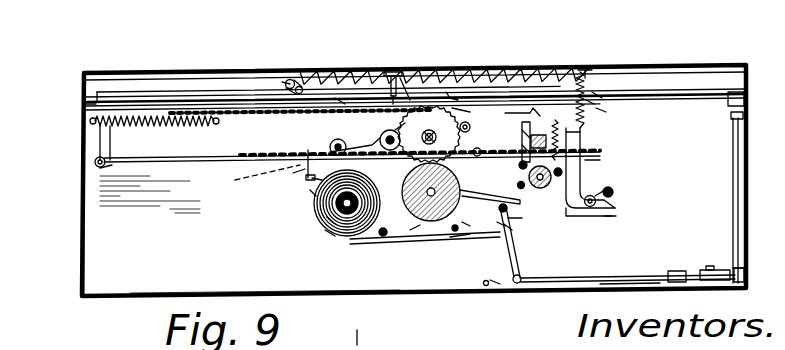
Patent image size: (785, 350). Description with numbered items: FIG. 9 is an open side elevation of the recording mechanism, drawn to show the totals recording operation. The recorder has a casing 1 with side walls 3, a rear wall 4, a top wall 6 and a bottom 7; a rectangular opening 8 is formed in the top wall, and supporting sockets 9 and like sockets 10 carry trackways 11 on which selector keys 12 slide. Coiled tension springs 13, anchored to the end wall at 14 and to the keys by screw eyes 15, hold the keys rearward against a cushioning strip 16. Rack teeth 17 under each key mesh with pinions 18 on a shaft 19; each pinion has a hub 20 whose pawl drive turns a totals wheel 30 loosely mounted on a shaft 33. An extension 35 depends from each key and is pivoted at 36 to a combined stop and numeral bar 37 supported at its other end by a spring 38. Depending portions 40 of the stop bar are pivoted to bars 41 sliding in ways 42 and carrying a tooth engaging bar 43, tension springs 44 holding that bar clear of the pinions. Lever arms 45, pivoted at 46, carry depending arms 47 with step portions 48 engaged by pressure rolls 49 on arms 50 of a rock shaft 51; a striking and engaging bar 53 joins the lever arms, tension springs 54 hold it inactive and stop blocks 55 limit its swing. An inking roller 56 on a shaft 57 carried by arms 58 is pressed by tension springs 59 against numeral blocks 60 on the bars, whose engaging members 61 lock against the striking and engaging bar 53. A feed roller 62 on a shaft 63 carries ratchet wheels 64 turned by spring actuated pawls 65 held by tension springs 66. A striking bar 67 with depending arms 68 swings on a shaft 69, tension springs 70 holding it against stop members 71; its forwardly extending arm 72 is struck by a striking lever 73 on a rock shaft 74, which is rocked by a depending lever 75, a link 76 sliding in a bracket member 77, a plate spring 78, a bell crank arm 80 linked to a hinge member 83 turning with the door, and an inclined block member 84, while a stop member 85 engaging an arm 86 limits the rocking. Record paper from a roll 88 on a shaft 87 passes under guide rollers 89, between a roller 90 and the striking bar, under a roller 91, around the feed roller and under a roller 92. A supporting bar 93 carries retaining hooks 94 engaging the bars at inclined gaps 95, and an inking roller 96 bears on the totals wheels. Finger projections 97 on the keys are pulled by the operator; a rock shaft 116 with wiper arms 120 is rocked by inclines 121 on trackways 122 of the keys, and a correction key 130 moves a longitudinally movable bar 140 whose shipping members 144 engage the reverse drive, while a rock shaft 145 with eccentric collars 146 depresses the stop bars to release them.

The casing 1 is at (110, 299).
The side walls 3 is at (92, 272).
The rear wall 4 is at (82, 250).
The top wall 6 is at (170, 74).
The bottom 7 is at (146, 299).
The rectangular opening 8 is at (393, 70).
The supporting sockets 9 is at (748, 85).
The sockets 10 is at (86, 110).
The trackways 11 is at (120, 105).
The selector keys 12 is at (100, 178).
The coiled tension springs 13 is at (98, 140).
The spring connection point 14 is at (90, 122).
The screw eyes 15 is at (212, 126).
The cushioning strip 16 is at (84, 98).
The rack teeth 17 is at (265, 117).
The pinions 18 is at (384, 132).
The shaft 19 is at (398, 126).
The hub 20 is at (425, 130).
The totals wheel 30 is at (384, 238).
The shaft 33 is at (417, 227).
The extension 35 is at (95, 163).
The pivotal connection 36 is at (84, 180).
The combined stop and numeral bar 37 is at (293, 173).
The spring 38 is at (596, 118).
The depending portions 40 is at (581, 80).
The bars 41 is at (520, 105).
The ways 42 is at (497, 108).
The tooth engaging bar 43 is at (455, 108).
The tension springs 44 is at (546, 118).
The lever arms 45 is at (584, 132).
The pivotal connection 46 is at (450, 96).
The depending arms 47 is at (582, 150).
The step portions 48 is at (622, 218).
The pressure rolls 49 is at (618, 213).
The arms 50 is at (596, 202).
The rock shaft 51 is at (612, 191).
The striking and engaging bar 53 is at (602, 110).
The tension springs 54 is at (598, 95).
The stop blocks 55 is at (590, 100).
The inking roller 56 is at (528, 178).
The shaft 57 is at (518, 186).
The arms 58 is at (498, 152).
The tension springs 59 is at (470, 118).
The numeral blocks 60 is at (412, 205).
The engaging members 61 is at (398, 160).
The feed roller 62 is at (560, 163).
The shaft 63 is at (562, 170).
The ratchet wheels 64 is at (600, 180).
The spring actuated pawls 65 is at (587, 70).
The tension springs 66 is at (591, 74).
The striking bar 67 is at (522, 212).
The depending arms 68 is at (508, 228).
The shaft 69 is at (467, 225).
The tension springs 70 is at (500, 225).
The stop members 71 is at (488, 286).
The forwardly extending arm 72 is at (518, 215).
The striking lever 73 is at (515, 218).
The rock shaft 74 is at (512, 222).
The depending lever 75 is at (543, 284).
The link 76 is at (618, 286).
The bracket member 77 is at (672, 284).
The plate spring 78 is at (703, 283).
The arm of bell crank lever 80 is at (740, 288).
The hinge member 83 is at (740, 200).
The inclined block member 84 is at (740, 268).
The stop member 85 is at (515, 243).
The arm 86 is at (495, 285).
The shaft 87 is at (325, 231).
The roll of record paper 88 is at (323, 233).
The guide rollers 89 is at (365, 241).
The roller 90 is at (452, 238).
The roller 91 is at (527, 209).
The roller 92 is at (603, 160).
The supporting bar 93 is at (310, 190).
The retaining hooks 94 is at (312, 178).
The inclined gaps 95 is at (235, 181).
The inking roller 96 is at (452, 231).
The projections 97 is at (401, 78).
The rock shaft 116 is at (284, 82).
The wiper arms 120 is at (288, 79).
The inclines 121 is at (252, 92).
The trackways 122 is at (133, 92).
The correction key 130 is at (397, 70).
The longitudinally movable bar 140 is at (327, 217).
The shipping members 144 is at (335, 98).
The rock shaft 145 is at (330, 148).
The eccentric collars 146 is at (338, 139).